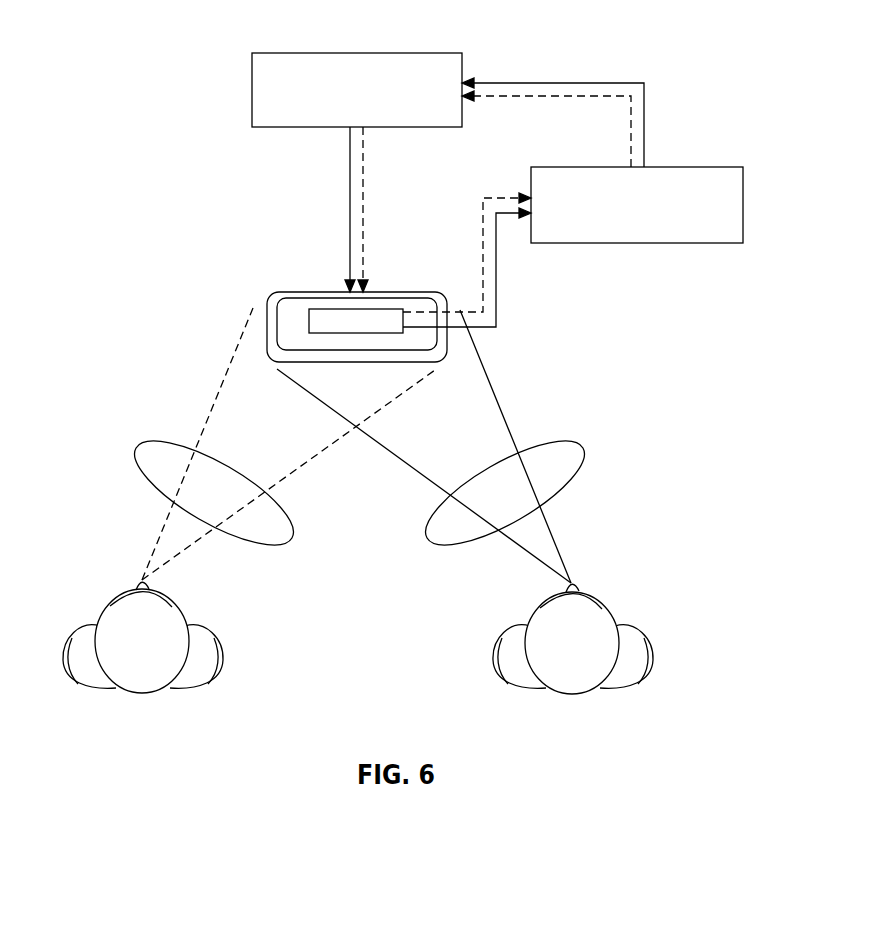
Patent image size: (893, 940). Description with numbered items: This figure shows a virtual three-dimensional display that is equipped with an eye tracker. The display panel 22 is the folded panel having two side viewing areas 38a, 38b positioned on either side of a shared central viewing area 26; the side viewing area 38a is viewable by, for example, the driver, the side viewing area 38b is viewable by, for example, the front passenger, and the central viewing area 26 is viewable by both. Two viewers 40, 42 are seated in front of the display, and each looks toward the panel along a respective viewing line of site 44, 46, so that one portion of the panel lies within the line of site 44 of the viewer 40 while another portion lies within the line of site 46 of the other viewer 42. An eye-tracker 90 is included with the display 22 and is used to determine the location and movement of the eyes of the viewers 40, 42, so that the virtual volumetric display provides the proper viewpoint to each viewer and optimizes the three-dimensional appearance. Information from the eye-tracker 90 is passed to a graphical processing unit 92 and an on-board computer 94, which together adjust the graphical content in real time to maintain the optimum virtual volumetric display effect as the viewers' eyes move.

The panel 22 is at (311, 408).
The shared central viewing area 26 is at (397, 363).
The side viewing area 38a is at (267, 330).
The side viewing area 38b is at (445, 342).
The viewer 40 is at (85, 625).
The viewer 42 is at (630, 625).
The viewing line of site 44 is at (162, 445).
The viewing line of site 46 is at (578, 445).
The eye-tracker 90 is at (333, 308).
The graphical processing unit 92 is at (310, 53).
The on-board computer 94 is at (683, 167).